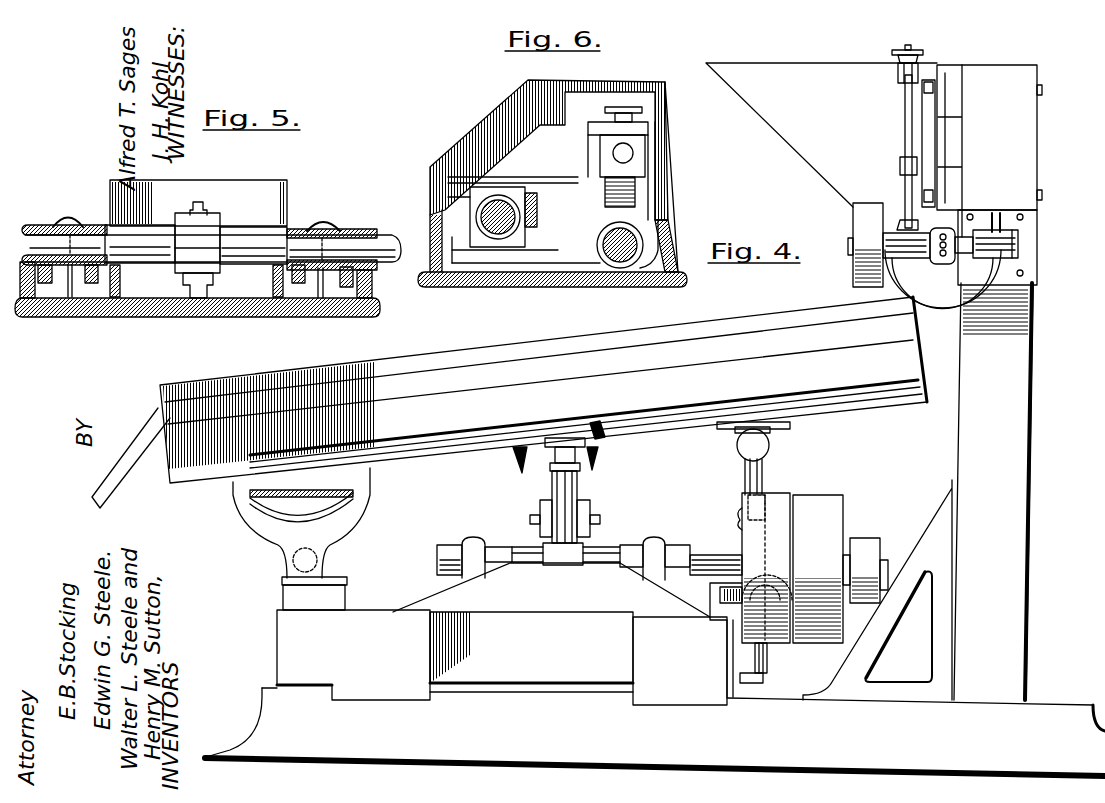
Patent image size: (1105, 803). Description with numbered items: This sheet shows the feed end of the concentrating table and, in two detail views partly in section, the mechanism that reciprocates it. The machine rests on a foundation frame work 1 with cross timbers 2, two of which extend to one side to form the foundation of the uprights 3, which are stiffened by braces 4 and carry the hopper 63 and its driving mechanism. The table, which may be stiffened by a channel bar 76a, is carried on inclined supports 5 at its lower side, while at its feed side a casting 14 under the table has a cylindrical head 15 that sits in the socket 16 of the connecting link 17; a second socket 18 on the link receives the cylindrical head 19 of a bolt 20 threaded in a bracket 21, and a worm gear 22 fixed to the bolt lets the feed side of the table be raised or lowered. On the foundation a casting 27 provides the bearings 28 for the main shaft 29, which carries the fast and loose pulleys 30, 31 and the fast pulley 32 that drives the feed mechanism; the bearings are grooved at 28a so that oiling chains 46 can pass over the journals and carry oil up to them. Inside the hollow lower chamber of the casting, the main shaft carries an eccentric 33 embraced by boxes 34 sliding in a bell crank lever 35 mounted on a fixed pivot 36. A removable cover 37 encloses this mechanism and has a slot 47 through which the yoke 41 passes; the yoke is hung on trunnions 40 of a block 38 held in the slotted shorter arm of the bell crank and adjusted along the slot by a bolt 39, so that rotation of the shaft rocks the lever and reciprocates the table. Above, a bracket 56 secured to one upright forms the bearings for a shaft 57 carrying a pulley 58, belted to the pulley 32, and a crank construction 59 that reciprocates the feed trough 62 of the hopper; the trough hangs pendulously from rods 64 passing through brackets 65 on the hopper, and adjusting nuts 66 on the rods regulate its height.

In FIG. 4, the foundation frame work 1 is at (502, 657).
In FIG. 4, the cross timbers 2 is at (655, 732).
In FIG. 4, the uprights 3 is at (993, 491).
In FIG. 4, the braces 4 is at (878, 633).
In FIG. 4, the supports 5 is at (509, 453).
In FIG. 4, the casting 14 is at (780, 430).
In FIG. 4, the cylindrical head 15 is at (735, 438).
In FIG. 4, the socket 16 is at (739, 457).
In FIG. 4, the connecting link 17 is at (765, 471).
In FIG. 4, the socket 18 is at (742, 501).
In FIG. 4, the cylindrical head 19 is at (745, 519).
In FIG. 4, the bolt 20 is at (740, 541).
In FIG. 4, the bracket 21 is at (770, 657).
In FIG. 4, the worm gear 22 is at (718, 598).
In FIG. 5, the casting 27 is at (260, 302).
In FIG. 4, the casting 27 is at (551, 623).
In FIG. 5, the bearings 28 is at (358, 231).
In FIG. 4, the bearings 28 is at (678, 557).
In FIG. 5, the grooves 28a is at (336, 209).
In FIG. 5, the main shaft 29 is at (399, 264).
In FIG. 6, the main shaft 29 is at (491, 239).
In FIG. 4, the main shaft 29 is at (716, 566).
In FIG. 4, the fast pulley 30 is at (767, 568).
In FIG. 4, the loose pulley 31 is at (818, 569).
In FIG. 4, the fast pulley 32 is at (865, 546).
In FIG. 5, the eccentric 33 is at (258, 233).
In FIG. 5, the boxes 34 is at (212, 228).
In FIG. 6, the boxes 34 is at (479, 193).
In FIG. 5, the bell crank lever 35 is at (198, 202).
In FIG. 6, the bell crank lever 35 is at (497, 205).
In FIG. 6, the fixed pivot 36 is at (620, 268).
In FIG. 6, the removable cover 37 is at (492, 115).
In FIG. 6, the block 38 is at (608, 150).
In FIG. 6, the bolt 39 is at (632, 106).
In FIG. 6, the trunnions 40 is at (640, 158).
In FIG. 4, the yoke 41 is at (540, 511).
In FIG. 5, the oiling chains 46 is at (73, 293).
In FIG. 6, the slot 47 is at (675, 176).
In FIG. 4, the bracket 56 is at (1020, 235).
In FIG. 4, the shaft 57 is at (966, 241).
In FIG. 4, the pulley 58 is at (855, 223).
In FIG. 4, the crank construction 59 is at (943, 265).
In FIG. 4, the feed trough 62 is at (883, 297).
In FIG. 4, the hopper 63 is at (874, 150).
In FIG. 4, the rods 64 is at (905, 138).
In FIG. 4, the brackets 65 is at (900, 82).
In FIG. 4, the adjusting nuts 66 is at (921, 59).
In FIG. 4, the channel bar 76a is at (588, 452).